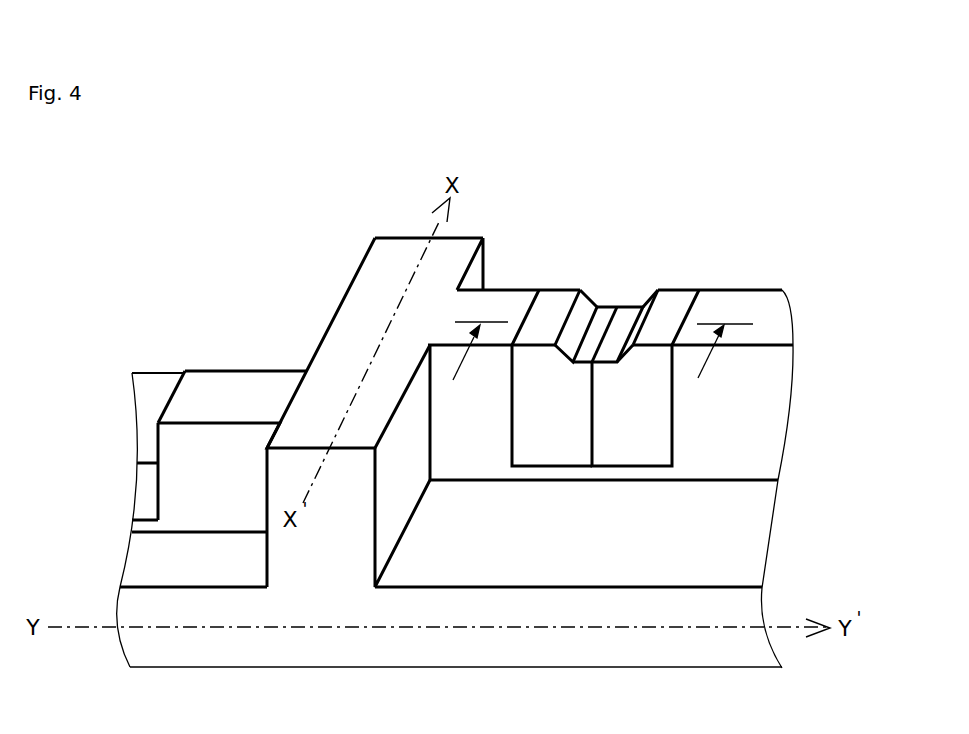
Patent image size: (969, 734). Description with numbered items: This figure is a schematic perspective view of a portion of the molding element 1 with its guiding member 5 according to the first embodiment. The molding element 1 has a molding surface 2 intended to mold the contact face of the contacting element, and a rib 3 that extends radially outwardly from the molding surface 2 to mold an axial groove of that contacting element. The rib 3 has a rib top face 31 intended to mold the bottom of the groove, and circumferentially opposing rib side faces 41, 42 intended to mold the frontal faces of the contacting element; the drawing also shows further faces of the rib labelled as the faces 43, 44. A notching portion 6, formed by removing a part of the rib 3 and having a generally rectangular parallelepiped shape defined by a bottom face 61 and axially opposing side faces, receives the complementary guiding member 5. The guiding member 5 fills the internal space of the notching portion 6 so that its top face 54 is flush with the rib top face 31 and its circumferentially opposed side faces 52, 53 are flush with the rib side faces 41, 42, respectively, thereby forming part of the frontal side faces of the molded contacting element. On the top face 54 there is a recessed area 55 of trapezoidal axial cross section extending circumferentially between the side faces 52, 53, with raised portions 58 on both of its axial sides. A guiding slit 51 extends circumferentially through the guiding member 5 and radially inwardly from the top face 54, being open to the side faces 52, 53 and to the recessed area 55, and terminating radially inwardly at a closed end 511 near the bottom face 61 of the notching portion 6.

The molding element 1 is at (193, 248).
The molding surface 2 is at (160, 404).
The rib 3 is at (237, 368).
The rib top face 31 is at (455, 319).
The rib side face 41 is at (233, 497).
The rib side face 42 is at (257, 370).
The third portion of insulating film 43 is at (407, 485).
The fourth portion of insulating film 44 is at (350, 287).
The guiding member 5 is at (640, 398).
The guiding slit 51 is at (590, 423).
The closed end 511 is at (592, 455).
The side face 52 is at (531, 427).
The side face 53 is at (680, 298).
The top face 54 is at (555, 318).
The recessed area 55 is at (605, 320).
The raised portion 58 is at (527, 357).
The notching portion 6 is at (147, 480).
The bottom face 61 is at (143, 507).